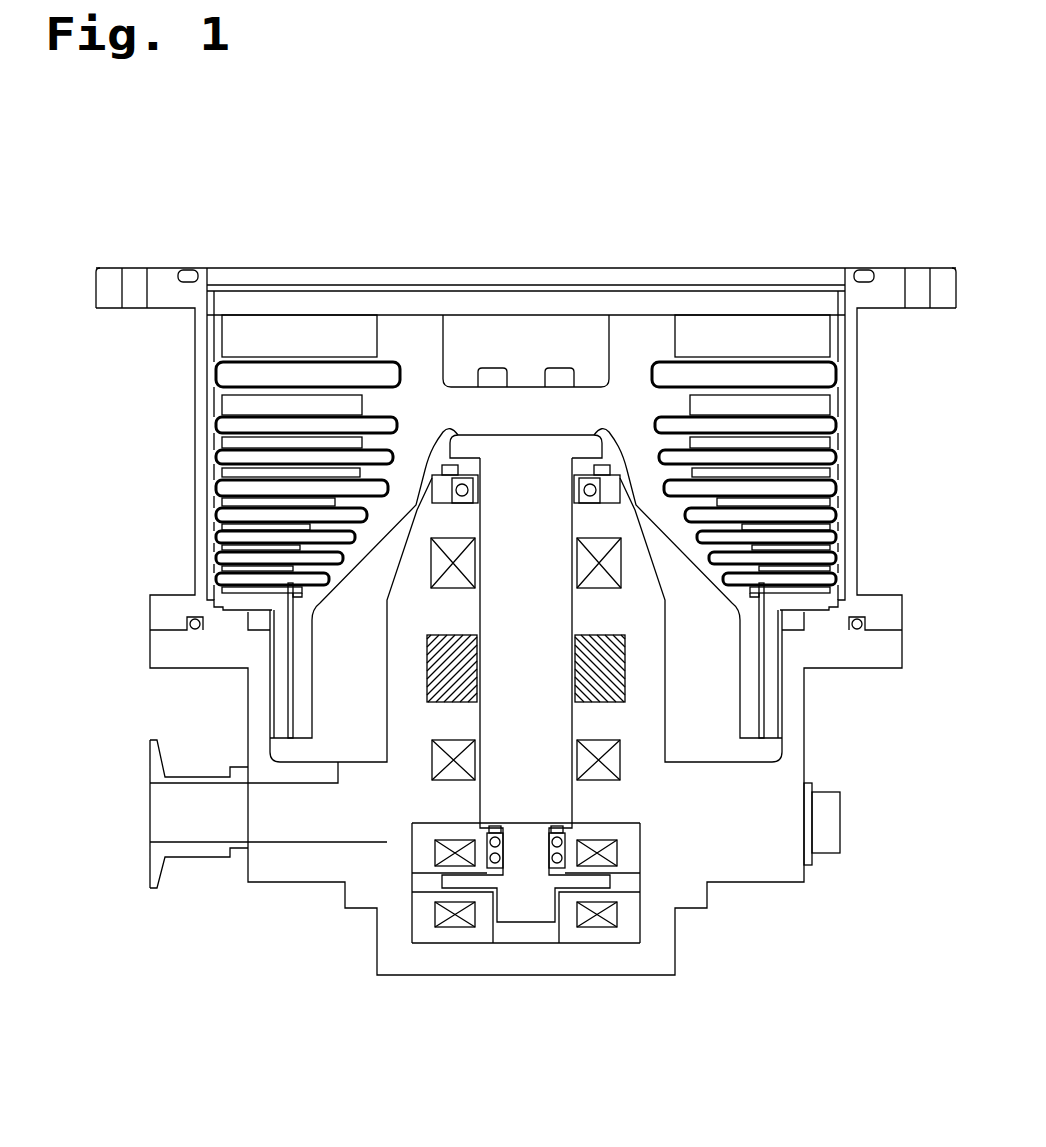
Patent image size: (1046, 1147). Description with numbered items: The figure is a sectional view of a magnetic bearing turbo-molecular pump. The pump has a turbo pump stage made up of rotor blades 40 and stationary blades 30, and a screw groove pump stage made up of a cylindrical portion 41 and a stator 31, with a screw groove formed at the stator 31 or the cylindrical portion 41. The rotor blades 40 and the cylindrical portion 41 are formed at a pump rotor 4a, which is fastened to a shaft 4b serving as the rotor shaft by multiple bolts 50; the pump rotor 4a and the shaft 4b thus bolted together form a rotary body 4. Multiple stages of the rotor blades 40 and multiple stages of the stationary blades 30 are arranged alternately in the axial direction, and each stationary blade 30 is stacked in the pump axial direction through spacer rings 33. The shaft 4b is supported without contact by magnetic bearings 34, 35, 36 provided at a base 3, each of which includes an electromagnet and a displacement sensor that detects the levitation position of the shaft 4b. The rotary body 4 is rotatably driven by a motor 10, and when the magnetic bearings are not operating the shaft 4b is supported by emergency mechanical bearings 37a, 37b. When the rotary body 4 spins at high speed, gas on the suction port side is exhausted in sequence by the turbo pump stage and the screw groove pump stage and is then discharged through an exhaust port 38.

The base 3 is at (395, 977).
The rotary body 4 is at (557, 202).
The pump rotor 4a is at (472, 407).
The shaft 4b is at (517, 495).
The motor 10 is at (630, 668).
The stationary blades 30 is at (240, 378).
The stator 31 is at (282, 677).
The spacer rings 33 is at (207, 449).
The magnetic bearing 34 is at (612, 552).
The magnetic bearing 35 is at (443, 760).
The magnetic bearing 36 is at (443, 915).
The emergency mechanical bearing 37a is at (595, 489).
The emergency mechanical bearing 37b is at (558, 870).
The exhaust port 38 is at (160, 827).
The rotor blades 40 is at (233, 402).
The cylindrical portion 41 is at (302, 707).
The bolts 50 is at (562, 375).